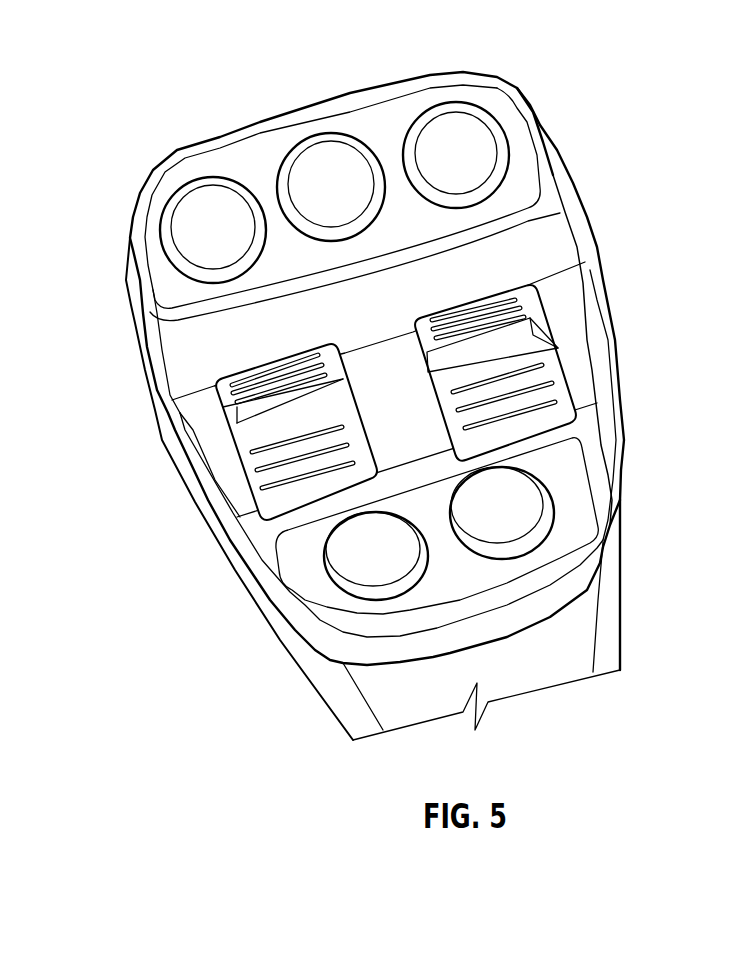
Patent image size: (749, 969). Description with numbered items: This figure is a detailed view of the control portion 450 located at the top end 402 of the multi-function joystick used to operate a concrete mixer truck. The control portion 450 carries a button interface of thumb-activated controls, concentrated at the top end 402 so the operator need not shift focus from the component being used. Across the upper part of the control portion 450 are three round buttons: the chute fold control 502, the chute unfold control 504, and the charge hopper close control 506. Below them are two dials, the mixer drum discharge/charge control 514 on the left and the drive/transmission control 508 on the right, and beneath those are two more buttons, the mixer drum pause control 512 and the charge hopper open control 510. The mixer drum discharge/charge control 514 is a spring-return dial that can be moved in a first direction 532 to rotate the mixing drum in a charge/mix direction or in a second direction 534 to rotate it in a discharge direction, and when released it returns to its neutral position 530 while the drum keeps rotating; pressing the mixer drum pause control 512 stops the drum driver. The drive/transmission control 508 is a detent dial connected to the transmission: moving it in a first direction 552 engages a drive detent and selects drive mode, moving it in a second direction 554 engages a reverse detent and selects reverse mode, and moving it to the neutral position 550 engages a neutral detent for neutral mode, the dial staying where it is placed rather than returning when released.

The top end 402 is at (202, 134).
The control portion 450 is at (85, 236).
The chute fold control 502 is at (200, 217).
The chute unfold control 504 is at (319, 178).
The charge hopper close control 506 is at (470, 128).
The drive/transmission control 508 is at (585, 369).
The charge hopper open control 510 is at (530, 512).
The mixer drum pause control 512 is at (340, 569).
The mixer drum discharge/charge control 514 is at (236, 494).
The neutral position 530 is at (232, 438).
The first direction 532 is at (173, 410).
The second direction 534 is at (230, 537).
The neutral position 550 is at (553, 338).
The first direction 552 is at (600, 255).
The second direction 554 is at (620, 407).